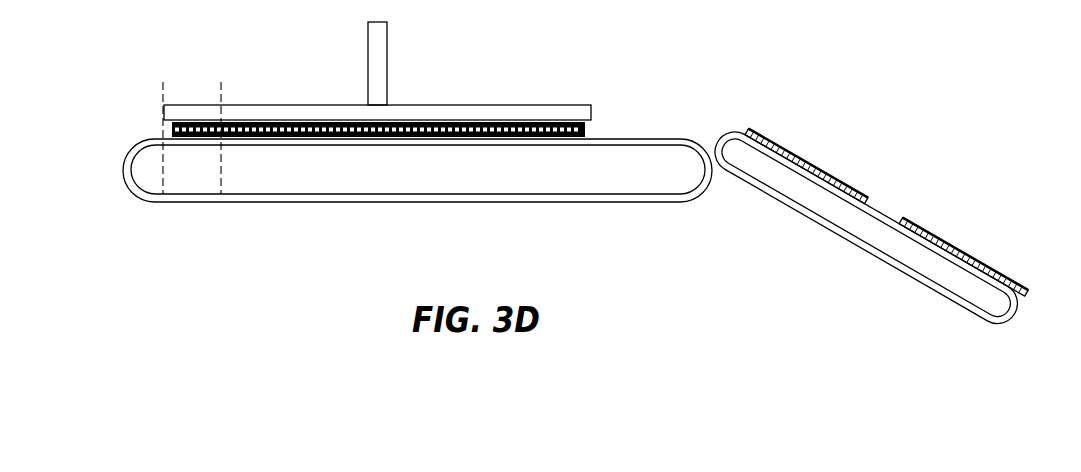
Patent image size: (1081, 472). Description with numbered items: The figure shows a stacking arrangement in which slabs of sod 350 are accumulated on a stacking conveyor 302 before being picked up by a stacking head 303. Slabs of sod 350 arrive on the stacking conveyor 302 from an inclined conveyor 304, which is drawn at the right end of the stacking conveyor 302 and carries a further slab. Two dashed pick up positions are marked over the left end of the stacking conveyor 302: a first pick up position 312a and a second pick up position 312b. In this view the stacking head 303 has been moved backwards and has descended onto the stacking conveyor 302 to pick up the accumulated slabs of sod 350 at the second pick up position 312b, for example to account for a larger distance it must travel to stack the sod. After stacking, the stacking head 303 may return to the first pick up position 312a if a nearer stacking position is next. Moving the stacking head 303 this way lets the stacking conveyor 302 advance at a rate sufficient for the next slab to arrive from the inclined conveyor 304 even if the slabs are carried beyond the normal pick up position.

The stacking conveyor 302 is at (320, 203).
The stacking head 303 is at (368, 57).
The inclined conveyor 304 is at (778, 199).
The slabs of sod 350 is at (700, 105).
The first pick up position 312a is at (218, 90).
The second pick up position 312b is at (163, 183).